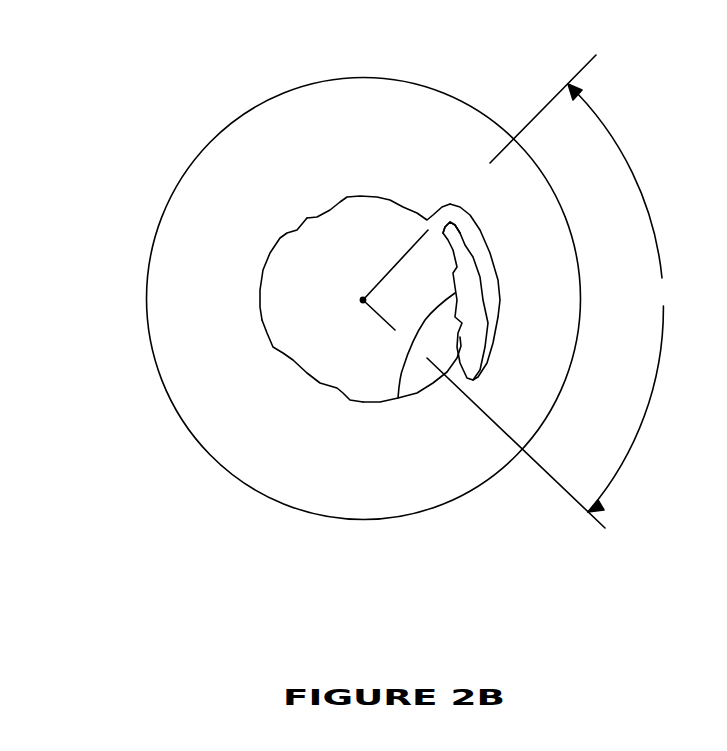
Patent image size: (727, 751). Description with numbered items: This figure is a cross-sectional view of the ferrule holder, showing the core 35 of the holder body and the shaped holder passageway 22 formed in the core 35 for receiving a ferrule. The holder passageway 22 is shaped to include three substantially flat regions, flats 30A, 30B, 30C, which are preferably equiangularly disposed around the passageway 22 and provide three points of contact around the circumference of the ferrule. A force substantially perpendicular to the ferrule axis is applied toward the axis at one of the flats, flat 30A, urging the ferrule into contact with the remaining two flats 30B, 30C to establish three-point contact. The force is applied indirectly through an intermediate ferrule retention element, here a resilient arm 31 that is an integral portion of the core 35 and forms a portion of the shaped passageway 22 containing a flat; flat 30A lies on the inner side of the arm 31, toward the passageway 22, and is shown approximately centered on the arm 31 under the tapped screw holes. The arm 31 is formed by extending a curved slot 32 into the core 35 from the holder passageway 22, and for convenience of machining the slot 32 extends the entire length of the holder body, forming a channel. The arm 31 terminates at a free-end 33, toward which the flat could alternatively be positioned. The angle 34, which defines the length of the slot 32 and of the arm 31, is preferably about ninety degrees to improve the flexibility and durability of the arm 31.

The holder passageway 22 is at (293, 313).
The flat 30A is at (398, 398).
The flat 30B is at (313, 382).
The flat 30C is at (307, 218).
The resilient arm 31 is at (463, 283).
The curved slot 32 is at (483, 327).
The free-end of the arm 33 is at (457, 230).
The angle 34 is at (551, 291).
The core 35 is at (432, 147).